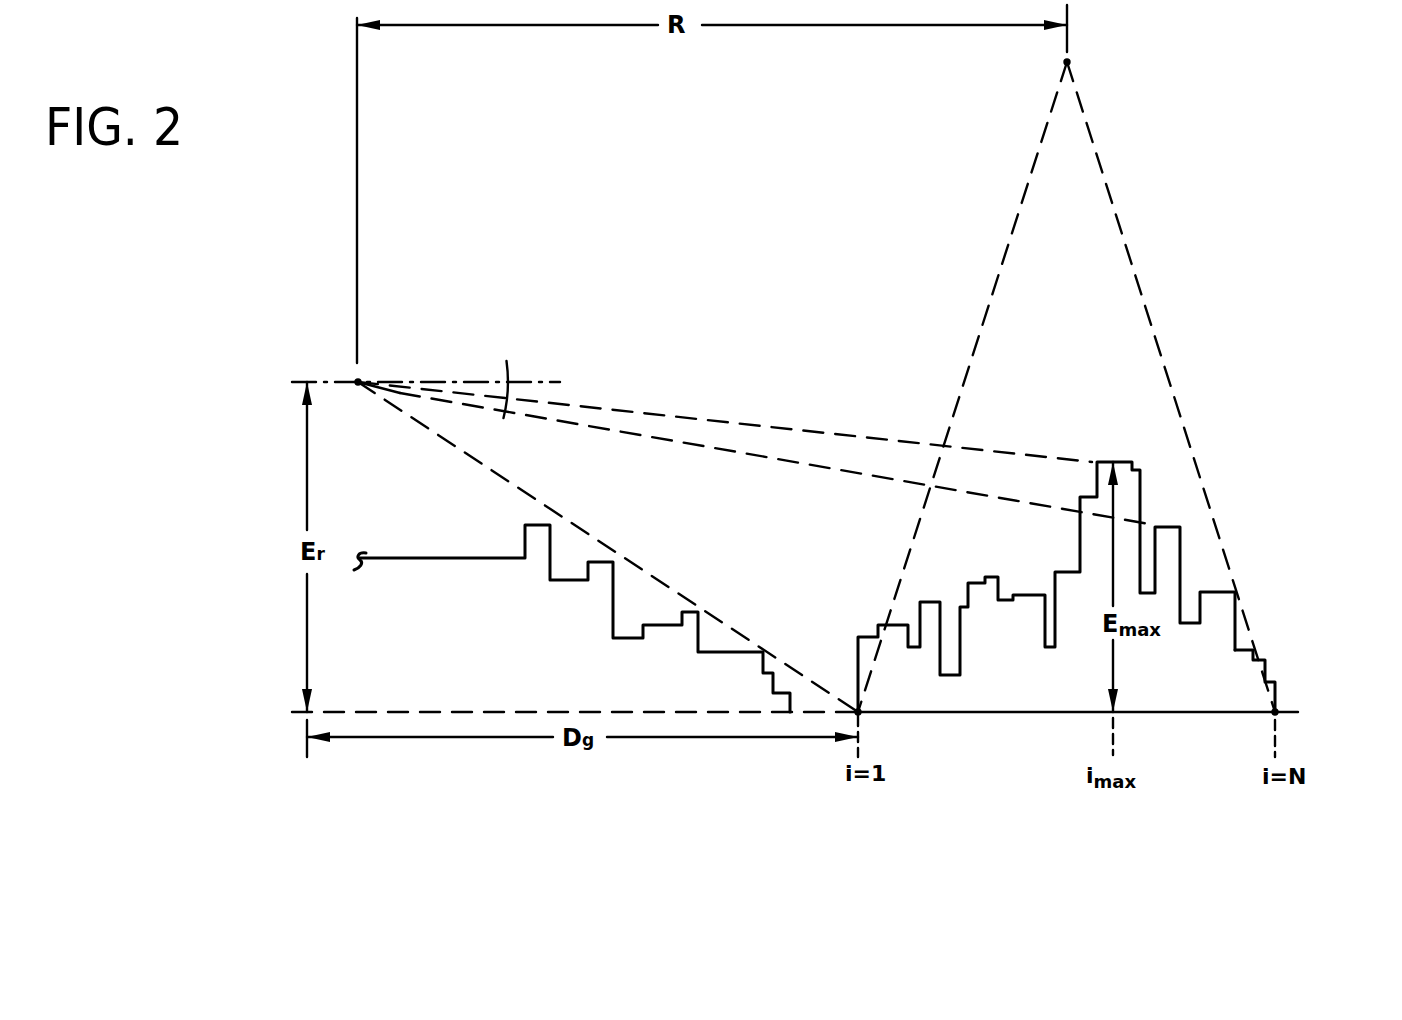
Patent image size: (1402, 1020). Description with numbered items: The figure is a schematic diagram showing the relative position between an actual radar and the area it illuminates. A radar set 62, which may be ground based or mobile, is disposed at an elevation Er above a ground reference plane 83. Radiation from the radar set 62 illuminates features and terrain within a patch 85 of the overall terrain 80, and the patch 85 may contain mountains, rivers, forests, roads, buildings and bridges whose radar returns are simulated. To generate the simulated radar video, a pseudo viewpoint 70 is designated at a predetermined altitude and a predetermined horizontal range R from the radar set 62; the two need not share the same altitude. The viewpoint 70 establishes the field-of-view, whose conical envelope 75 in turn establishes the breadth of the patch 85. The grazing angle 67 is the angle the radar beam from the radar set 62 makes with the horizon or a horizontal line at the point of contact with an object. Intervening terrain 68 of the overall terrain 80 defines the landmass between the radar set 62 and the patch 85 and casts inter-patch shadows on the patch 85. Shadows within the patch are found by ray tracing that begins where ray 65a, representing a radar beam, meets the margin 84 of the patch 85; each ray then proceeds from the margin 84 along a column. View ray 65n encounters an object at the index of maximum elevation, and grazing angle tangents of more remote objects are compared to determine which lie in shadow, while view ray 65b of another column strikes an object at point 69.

The radar set 62 is at (361, 378).
The grazing angle 67 is at (514, 391).
The view ray 65n is at (777, 428).
The view ray 65b is at (876, 474).
The ray 65a is at (667, 590).
The intervening terrain data 68 is at (437, 557).
The point 69 is at (1156, 522).
The pseudo viewpoint 70 is at (1070, 62).
The conical envelope of field-of-view 75 is at (1002, 262).
The overall terrain 80 is at (1268, 658).
The ground reference plane 83 is at (384, 711).
The margin of patch 84 is at (860, 714).
The patch 85 is at (1170, 710).